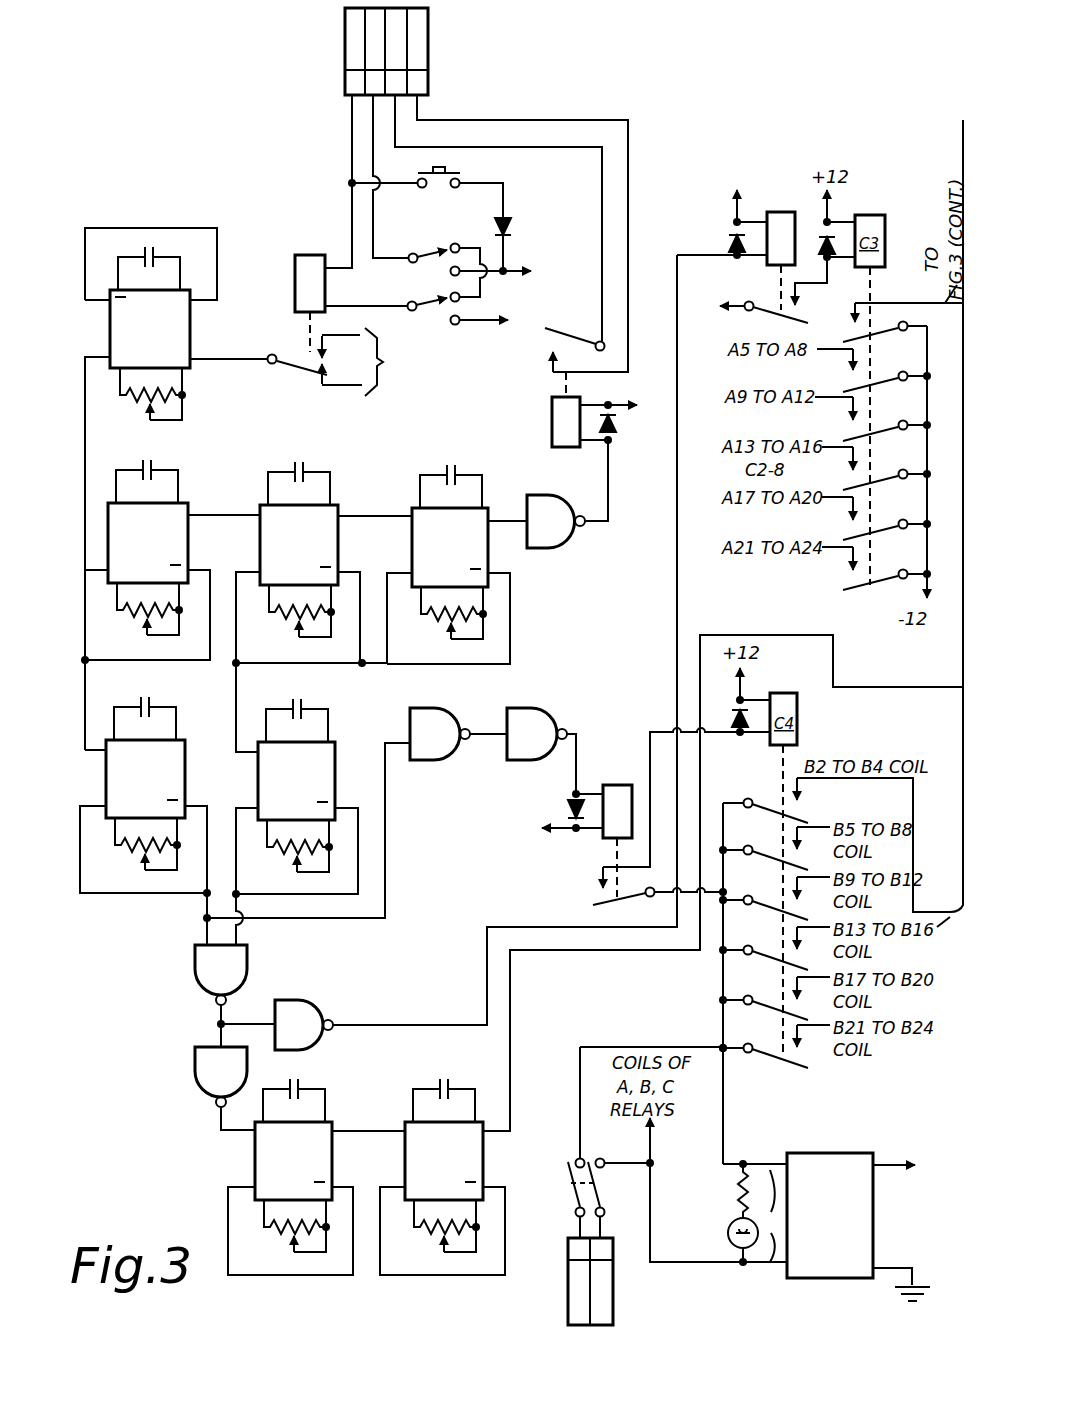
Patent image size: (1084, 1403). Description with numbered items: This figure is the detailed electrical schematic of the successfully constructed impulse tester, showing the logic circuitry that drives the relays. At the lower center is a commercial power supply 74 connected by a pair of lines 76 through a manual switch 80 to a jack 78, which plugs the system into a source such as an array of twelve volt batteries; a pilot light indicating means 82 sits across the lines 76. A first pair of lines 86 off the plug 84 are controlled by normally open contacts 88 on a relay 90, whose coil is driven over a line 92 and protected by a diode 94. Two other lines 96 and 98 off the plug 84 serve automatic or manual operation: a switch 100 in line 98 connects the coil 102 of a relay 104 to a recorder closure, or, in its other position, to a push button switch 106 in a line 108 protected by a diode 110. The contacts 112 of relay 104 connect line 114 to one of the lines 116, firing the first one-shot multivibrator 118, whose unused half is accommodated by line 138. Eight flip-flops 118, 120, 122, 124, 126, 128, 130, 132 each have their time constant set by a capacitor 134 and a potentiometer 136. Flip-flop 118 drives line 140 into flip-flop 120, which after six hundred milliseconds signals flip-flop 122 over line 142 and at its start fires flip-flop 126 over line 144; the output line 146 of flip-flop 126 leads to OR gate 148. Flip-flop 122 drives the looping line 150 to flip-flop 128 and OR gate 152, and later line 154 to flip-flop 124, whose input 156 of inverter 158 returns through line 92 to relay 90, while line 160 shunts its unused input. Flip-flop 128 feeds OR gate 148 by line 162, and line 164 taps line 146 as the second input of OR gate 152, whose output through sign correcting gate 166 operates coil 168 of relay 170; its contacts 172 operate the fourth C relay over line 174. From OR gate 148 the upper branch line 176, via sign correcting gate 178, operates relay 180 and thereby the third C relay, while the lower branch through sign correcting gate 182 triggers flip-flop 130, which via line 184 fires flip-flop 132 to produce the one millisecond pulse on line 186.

The power supply 74 is at (815, 1152).
The lines 76 is at (759, 1213).
The jack 78 is at (567, 1280).
The manual switch 80 is at (573, 1197).
The indicating means 82 is at (732, 1212).
The plug 84 is at (341, 51).
The first pair of lines 86 is at (573, 145).
The normally open pair of contacts 88 is at (548, 365).
The relay 90 is at (552, 422).
The line 92 is at (607, 479).
The protective diode 94 is at (613, 424).
The line 96 is at (350, 127).
The line 98 is at (375, 194).
The switch 100 is at (428, 247).
The coil 102 is at (295, 283).
The relay 104 is at (308, 252).
The push button switch 106 is at (470, 178).
The line 108 is at (508, 251).
The diode 110 is at (508, 220).
The contacts 112 is at (294, 371).
The line 114 is at (241, 356).
The lines 116 is at (386, 363).
The one-shot multivibrator 118 is at (150, 329).
The flip-flop 120 is at (148, 543).
The flip-flop 122 is at (299, 545).
The flip-flop 124 is at (450, 547).
The flip-flop 126 is at (145, 779).
The flip-flop 128 is at (296, 781).
The flip-flop 130 is at (293, 1161).
The flip-flop 132 is at (444, 1161).
The capacitor 134 is at (146, 257).
The potentiometer 136 is at (134, 400).
The line 138 is at (127, 227).
The line 140 is at (88, 438).
The line 142 is at (236, 512).
The line 144 is at (87, 692).
The branching output line 146 is at (207, 880).
The OR gate 148 is at (195, 965).
The looping branching line 150 is at (250, 666).
The OR gate 152 is at (438, 706).
The line 154 is at (388, 513).
The input 156 is at (500, 512).
The inverter 158 is at (574, 539).
The line 160 is at (511, 645).
The looping line 162 is at (266, 896).
The line 164 is at (288, 922).
The sign correcting gate 166 is at (534, 706).
The coil 168 is at (622, 785).
The relay 170 is at (598, 842).
The normally open contacts 172 is at (592, 905).
The line 174 is at (650, 733).
The upper branch line 176 is at (242, 1020).
The sign correcting gate 178 is at (313, 1004).
The relay 180 is at (782, 210).
The sign correcting gate 182 is at (195, 1067).
The line 184 is at (386, 1128).
The line 186 is at (512, 1095).